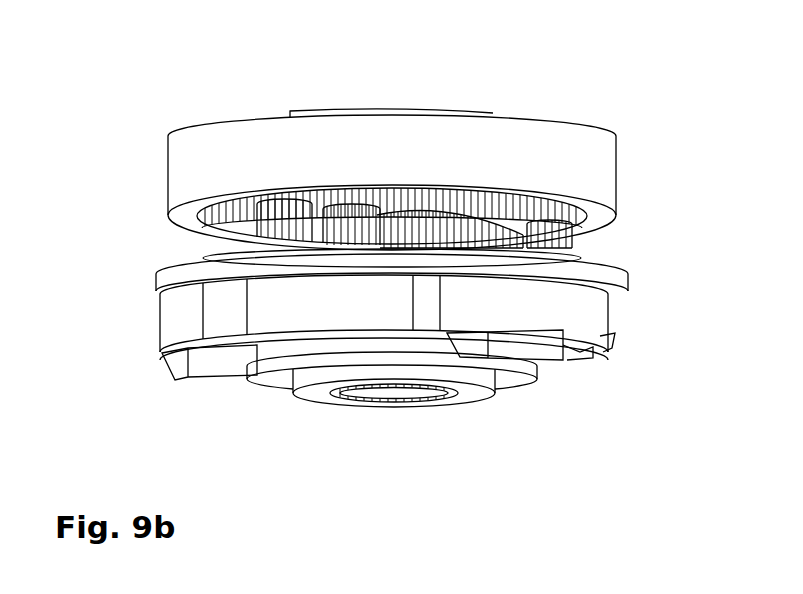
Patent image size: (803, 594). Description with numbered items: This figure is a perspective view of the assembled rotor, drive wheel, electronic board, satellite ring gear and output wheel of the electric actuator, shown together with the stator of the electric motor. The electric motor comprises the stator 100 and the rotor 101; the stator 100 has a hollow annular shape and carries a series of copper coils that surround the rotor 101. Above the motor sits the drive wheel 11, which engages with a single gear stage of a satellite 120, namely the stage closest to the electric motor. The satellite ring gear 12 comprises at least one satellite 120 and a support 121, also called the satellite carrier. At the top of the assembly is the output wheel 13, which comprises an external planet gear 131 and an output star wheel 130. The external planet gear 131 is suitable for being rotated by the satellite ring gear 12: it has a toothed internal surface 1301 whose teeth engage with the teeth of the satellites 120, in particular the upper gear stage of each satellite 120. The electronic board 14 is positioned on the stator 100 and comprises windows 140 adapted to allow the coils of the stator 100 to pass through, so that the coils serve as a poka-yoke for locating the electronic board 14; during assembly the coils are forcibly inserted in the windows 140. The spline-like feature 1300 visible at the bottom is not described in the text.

The output wheel 13 is at (392, 227).
The output star wheel 130 is at (522, 36).
The external planet gear 131 is at (522, 132).
The toothed internal surface 1301 is at (224, 210).
The satellite 120 is at (345, 207).
The drive wheel 11 is at (204, 258).
The satellite ring gear 12 is at (428, 268).
The support 121 is at (590, 267).
The electronic board 14 is at (163, 282).
The windows 140 is at (217, 363).
The rotor 101 is at (282, 354).
The stator 100 is at (394, 391).
The spline teeth 1300 is at (400, 400).